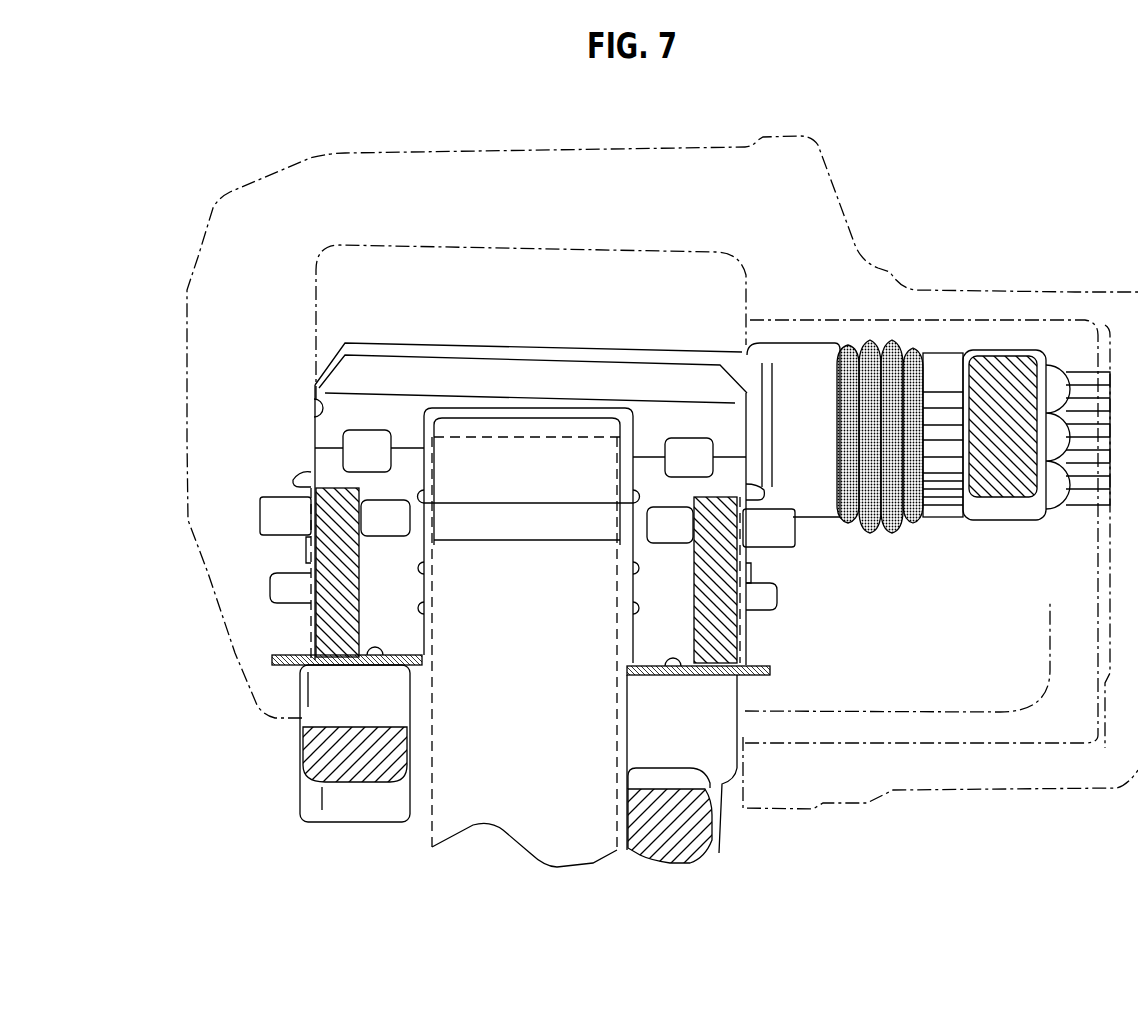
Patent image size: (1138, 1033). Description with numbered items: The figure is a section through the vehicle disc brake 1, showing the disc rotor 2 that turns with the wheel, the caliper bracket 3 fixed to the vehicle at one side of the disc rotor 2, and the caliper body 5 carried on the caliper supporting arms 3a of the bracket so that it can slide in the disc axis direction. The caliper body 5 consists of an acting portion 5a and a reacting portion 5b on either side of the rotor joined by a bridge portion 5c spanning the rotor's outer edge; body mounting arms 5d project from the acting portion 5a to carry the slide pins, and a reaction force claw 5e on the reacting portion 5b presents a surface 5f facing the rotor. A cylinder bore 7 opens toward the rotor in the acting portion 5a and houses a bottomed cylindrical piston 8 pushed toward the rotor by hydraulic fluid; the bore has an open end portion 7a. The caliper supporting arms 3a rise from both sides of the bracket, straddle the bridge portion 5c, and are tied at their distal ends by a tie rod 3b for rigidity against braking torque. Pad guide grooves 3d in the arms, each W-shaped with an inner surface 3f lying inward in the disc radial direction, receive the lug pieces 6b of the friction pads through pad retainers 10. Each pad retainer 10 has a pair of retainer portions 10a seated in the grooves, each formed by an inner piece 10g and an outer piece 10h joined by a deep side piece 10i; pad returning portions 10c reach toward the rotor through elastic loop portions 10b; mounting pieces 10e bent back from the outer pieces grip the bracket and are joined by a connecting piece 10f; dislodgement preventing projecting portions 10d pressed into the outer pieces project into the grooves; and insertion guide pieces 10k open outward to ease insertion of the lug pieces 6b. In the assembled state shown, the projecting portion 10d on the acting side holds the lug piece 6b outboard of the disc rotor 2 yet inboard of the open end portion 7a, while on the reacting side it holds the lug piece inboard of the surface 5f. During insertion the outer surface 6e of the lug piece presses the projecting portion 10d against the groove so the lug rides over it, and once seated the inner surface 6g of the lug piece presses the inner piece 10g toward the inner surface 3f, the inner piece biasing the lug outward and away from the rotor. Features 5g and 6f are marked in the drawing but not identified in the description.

The vehicle disc brake 1 is at (692, 120).
The disc rotor 2 is at (497, 826).
The caliper bracket 3 is at (721, 828).
The caliper supporting arm 3a is at (745, 350).
The tie rod 3b is at (348, 822).
The pad guide groove 3d is at (430, 610).
The inner surface 3f is at (378, 666).
The caliper body 5 is at (838, 162).
The acting portion 5a is at (1082, 292).
The reacting portion 5b is at (215, 210).
The bridge portion 5c is at (510, 150).
The body mounting arm 5d is at (1005, 497).
The reaction force claw 5e is at (273, 707).
The surface 5f is at (314, 409).
The housing support portion 5g is at (337, 666).
The lug piece 6b is at (350, 620).
The outer surface 6e is at (333, 487).
The bearing side projection 6f is at (308, 548).
The inner surface 6g is at (708, 676).
The cylinder bore 7 is at (913, 740).
The open end portion 7a is at (733, 768).
The piston 8 is at (958, 714).
The pad retainer 10 is at (465, 356).
The retainer portion 10a is at (315, 625).
The elastic loop portion 10b is at (262, 515).
The pad returning portion 10c is at (380, 536).
The dislodgement preventing projecting portion 10d is at (311, 497).
The mounting piece 10e is at (410, 448).
The connecting piece 10f is at (548, 365).
The inner piece 10g is at (400, 655).
The outer piece 10h is at (429, 496).
The deep side piece 10i is at (428, 570).
The insertion guide piece 10k is at (296, 480).